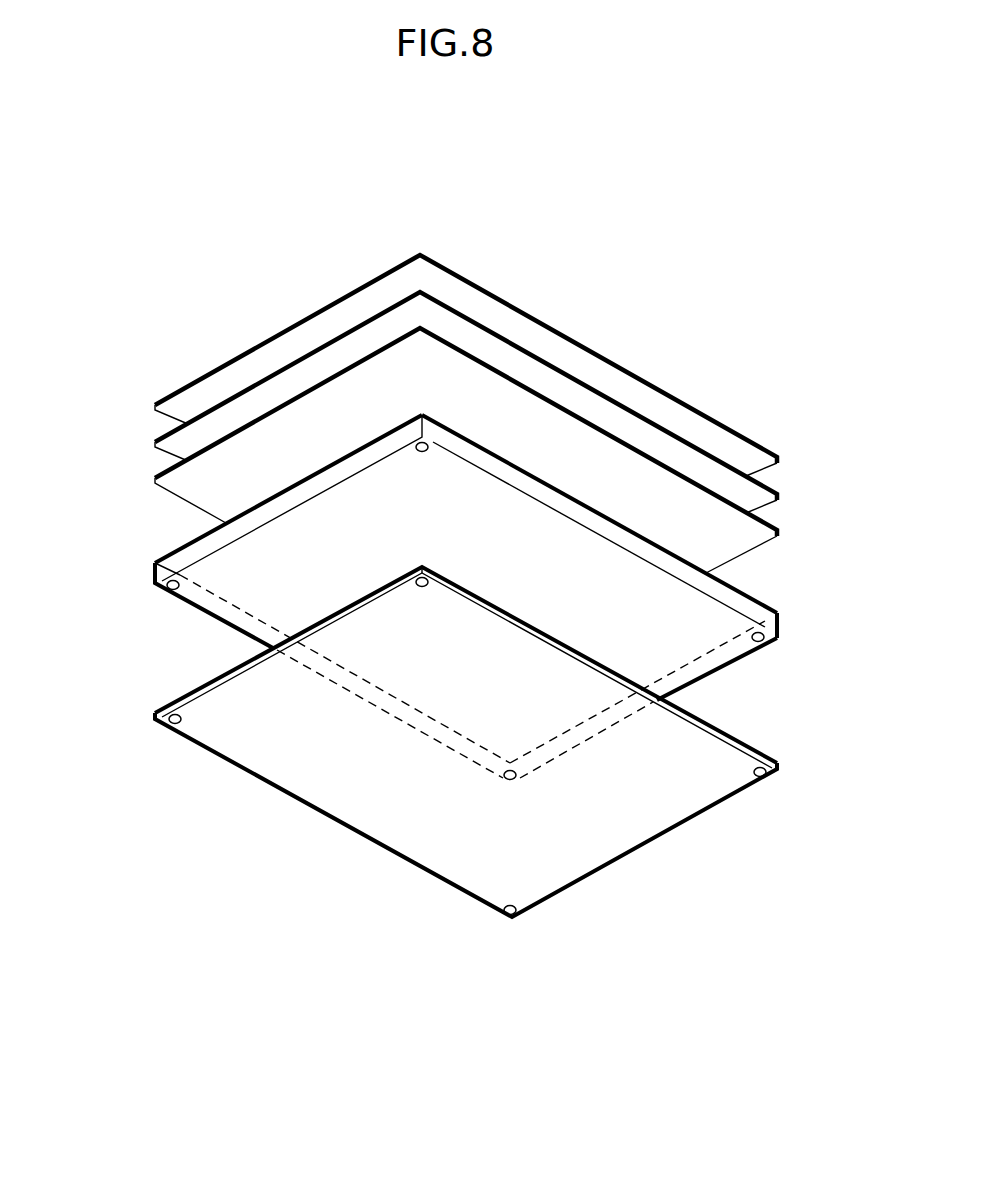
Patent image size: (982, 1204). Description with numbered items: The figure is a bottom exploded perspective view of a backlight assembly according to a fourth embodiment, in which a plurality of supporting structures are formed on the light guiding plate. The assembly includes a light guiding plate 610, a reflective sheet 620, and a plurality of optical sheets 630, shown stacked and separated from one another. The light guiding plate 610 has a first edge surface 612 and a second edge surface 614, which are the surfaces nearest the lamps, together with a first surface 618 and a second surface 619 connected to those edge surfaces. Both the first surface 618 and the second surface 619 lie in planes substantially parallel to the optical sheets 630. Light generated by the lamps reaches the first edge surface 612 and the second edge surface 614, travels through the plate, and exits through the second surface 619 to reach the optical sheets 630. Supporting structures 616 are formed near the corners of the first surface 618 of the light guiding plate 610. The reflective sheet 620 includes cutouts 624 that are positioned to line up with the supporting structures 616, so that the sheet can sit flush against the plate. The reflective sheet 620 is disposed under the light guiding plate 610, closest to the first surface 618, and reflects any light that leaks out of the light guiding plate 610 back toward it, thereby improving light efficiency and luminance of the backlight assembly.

The light guiding plate 610 is at (146, 575).
The first edge surface 612 is at (760, 605).
The second edge surface 614 is at (228, 617).
The supporting structures 616 is at (433, 442).
The first surface 618 is at (592, 550).
The second surface 619 is at (683, 642).
The reflective sheet 620 is at (165, 722).
The cutouts 624 is at (447, 583).
The optical sheets 630 is at (155, 403).